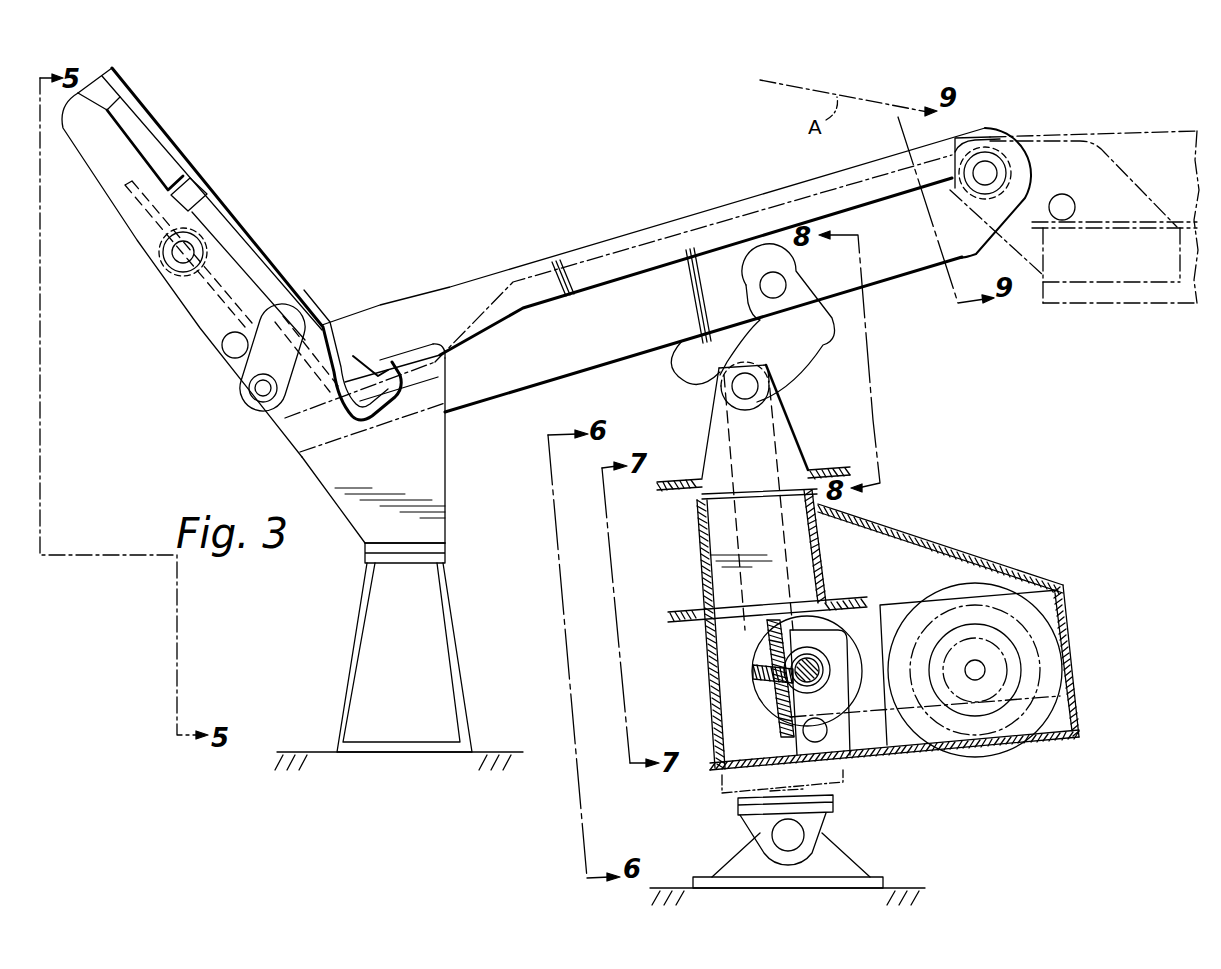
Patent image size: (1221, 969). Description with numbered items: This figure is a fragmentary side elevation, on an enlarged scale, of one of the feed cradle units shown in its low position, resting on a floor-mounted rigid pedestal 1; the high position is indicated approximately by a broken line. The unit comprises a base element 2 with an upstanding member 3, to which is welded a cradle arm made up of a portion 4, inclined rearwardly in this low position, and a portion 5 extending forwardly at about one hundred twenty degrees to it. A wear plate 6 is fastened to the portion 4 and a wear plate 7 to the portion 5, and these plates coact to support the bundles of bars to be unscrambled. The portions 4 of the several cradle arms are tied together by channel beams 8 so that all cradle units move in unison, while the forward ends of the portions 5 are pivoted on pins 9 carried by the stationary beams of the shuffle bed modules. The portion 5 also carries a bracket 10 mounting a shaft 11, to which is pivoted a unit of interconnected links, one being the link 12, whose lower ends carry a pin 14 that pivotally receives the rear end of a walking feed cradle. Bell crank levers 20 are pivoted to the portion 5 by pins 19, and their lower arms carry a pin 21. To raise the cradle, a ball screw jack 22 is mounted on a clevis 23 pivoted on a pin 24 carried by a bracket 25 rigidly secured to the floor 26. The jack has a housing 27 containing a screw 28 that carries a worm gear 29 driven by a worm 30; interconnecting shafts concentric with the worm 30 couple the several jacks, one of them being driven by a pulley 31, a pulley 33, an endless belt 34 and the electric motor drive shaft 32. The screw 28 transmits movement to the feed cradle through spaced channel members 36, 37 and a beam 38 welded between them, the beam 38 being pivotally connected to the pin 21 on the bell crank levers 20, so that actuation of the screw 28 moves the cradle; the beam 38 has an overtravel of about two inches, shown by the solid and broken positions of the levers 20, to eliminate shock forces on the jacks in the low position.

The pedestal 1 is at (455, 610).
The base element 2 is at (367, 547).
The upstanding member 3 is at (433, 458).
The portion of the cradle arm 4 is at (137, 240).
The portion of the cradle arm 5 is at (612, 357).
The wear plate 6 is at (248, 225).
The wear plate 7 is at (663, 223).
The channel beams 8 is at (150, 160).
The pins 9 is at (990, 168).
The bracket 10 is at (212, 292).
The shaft 11 is at (180, 263).
The link 12 is at (236, 388).
The pin 14 is at (258, 402).
The pins 19 is at (780, 295).
The bell crank levers 20 is at (785, 372).
The pin 21 is at (740, 387).
The jack 22 is at (845, 782).
The clevis 23 is at (817, 820).
The pin 24 is at (793, 835).
The bracket 25 is at (840, 867).
The floor 26 is at (903, 887).
The housing 27 is at (702, 677).
The screw 28 is at (783, 623).
The worm gear 29 is at (757, 670).
The worm 30 is at (817, 690).
The pulley 31 is at (767, 705).
The electric motor drive shaft 32 is at (985, 670).
The pulley 33 is at (1005, 752).
The endless belt 34 is at (882, 605).
The channel member 36 is at (702, 548).
The channel member 37 is at (825, 557).
The beam 38 is at (787, 455).